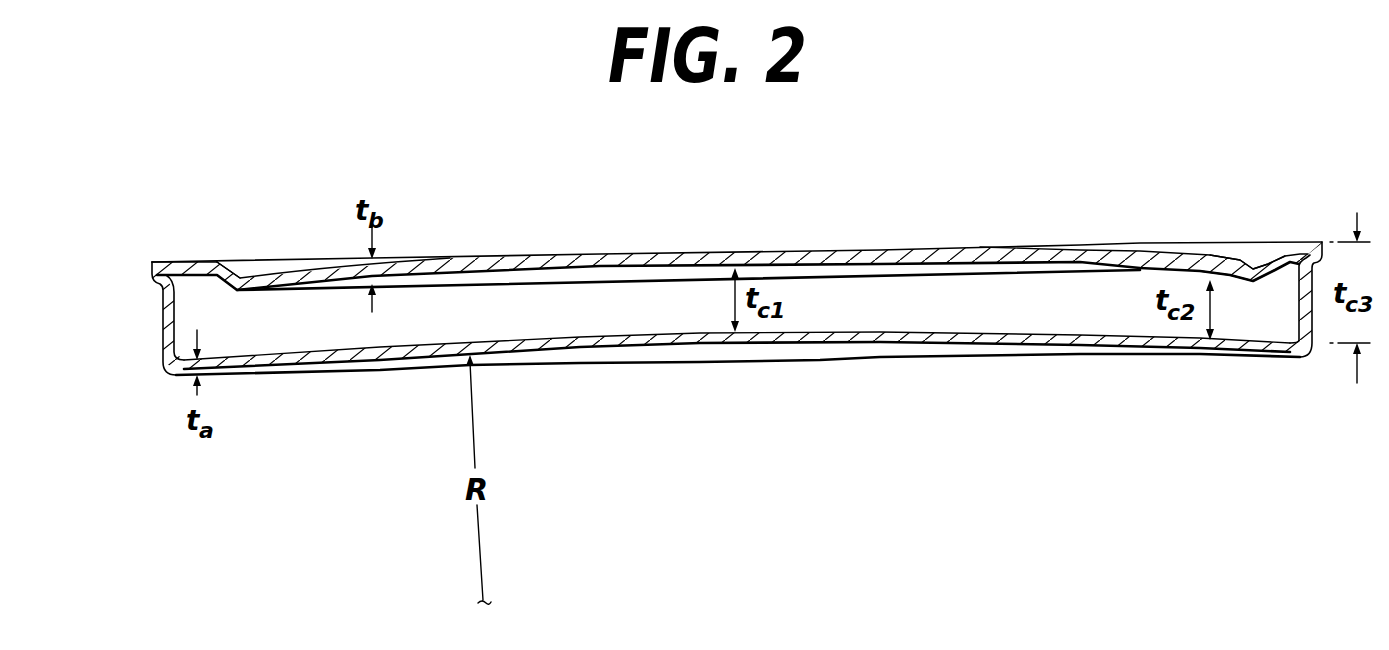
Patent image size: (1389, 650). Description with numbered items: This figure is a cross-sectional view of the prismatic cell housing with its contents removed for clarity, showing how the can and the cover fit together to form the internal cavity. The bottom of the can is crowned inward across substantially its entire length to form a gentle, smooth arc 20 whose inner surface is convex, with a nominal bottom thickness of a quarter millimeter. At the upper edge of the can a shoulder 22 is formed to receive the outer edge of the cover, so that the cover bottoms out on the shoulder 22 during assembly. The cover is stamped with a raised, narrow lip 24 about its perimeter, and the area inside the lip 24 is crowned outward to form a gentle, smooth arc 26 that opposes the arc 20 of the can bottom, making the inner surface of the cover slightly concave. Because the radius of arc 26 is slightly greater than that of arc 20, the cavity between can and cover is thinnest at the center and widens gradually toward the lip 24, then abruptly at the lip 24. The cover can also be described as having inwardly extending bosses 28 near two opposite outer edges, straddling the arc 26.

The arc 20 is at (568, 334).
The shoulder 22 is at (150, 295).
The lip 24 is at (183, 226).
The arc 26 is at (642, 262).
The bosses 28 is at (232, 292).